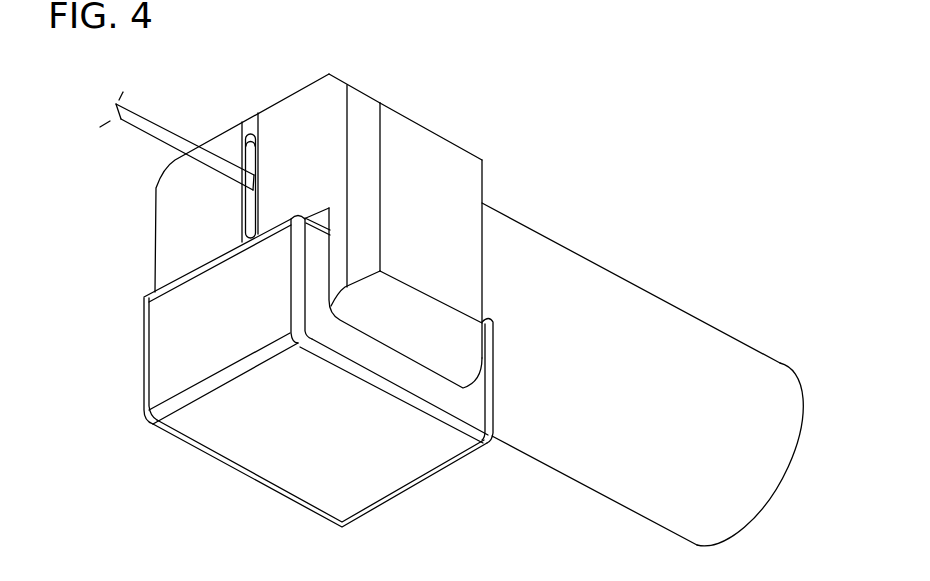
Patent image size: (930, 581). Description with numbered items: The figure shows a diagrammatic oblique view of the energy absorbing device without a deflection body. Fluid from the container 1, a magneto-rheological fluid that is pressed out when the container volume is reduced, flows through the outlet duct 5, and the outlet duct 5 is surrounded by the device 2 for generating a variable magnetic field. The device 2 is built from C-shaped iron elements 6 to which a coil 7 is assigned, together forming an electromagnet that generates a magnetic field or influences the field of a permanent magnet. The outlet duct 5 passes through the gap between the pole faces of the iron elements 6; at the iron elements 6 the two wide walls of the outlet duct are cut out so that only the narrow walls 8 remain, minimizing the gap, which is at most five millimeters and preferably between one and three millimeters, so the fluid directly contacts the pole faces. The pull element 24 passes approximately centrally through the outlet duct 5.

The container 1 is at (630, 333).
The device for generating a variable magnetic field 2 is at (312, 173).
The outlet duct 5 is at (248, 217).
The iron elements 6 is at (370, 178).
The coil 7 is at (227, 422).
The narrow walls 8 is at (250, 118).
The pull element 24 is at (123, 122).